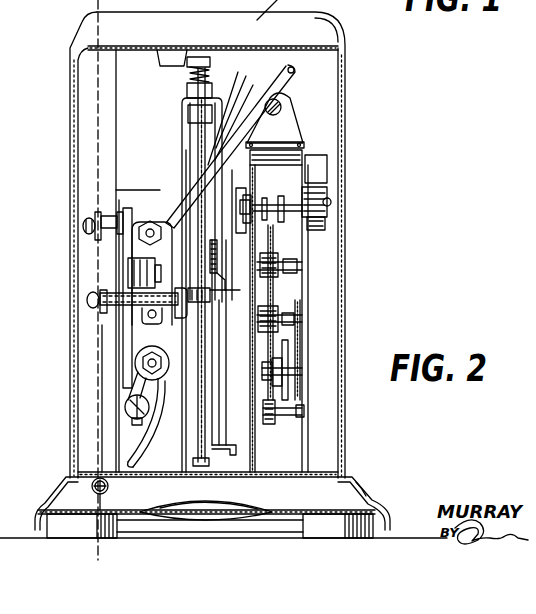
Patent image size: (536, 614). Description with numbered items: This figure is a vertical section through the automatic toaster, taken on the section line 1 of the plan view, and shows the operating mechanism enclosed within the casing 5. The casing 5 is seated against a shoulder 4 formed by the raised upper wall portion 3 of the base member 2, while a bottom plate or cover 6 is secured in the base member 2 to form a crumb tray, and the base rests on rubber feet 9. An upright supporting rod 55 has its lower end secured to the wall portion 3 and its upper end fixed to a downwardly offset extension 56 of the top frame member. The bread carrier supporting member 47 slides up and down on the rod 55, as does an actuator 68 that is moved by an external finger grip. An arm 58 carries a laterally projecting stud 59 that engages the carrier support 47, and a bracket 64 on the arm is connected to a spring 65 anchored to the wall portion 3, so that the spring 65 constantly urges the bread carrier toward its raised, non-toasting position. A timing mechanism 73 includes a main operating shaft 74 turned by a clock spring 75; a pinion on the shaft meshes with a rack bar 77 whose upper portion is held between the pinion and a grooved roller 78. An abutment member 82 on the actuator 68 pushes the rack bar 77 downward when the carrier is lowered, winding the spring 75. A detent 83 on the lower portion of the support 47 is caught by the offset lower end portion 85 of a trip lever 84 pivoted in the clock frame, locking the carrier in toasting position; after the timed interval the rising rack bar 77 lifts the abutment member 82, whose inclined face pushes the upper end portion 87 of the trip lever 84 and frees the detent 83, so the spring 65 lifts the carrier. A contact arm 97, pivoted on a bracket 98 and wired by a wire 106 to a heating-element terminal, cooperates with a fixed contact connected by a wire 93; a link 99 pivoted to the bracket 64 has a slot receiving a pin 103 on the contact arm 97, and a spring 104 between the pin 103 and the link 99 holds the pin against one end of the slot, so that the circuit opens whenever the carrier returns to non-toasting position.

The section line 1 is at (145, 562).
The base member 2 is at (62, 490).
The upper wall portion 3 is at (312, 472).
The shoulder 4 is at (346, 478).
The casing 5 is at (346, 324).
The bottom plate or cover 6 is at (290, 514).
The feet 9 is at (68, 528).
The supporting member 47 is at (181, 147).
The upright supporting rod 55 is at (203, 420).
The extension 56 is at (176, 66).
The arm 58 is at (100, 300).
The stud 59 is at (154, 324).
The bracket 64 is at (121, 371).
The spring 65 is at (110, 487).
The actuator 68 is at (241, 115).
The timing mechanism 73 is at (308, 343).
The main operating shaft 74 is at (295, 203).
The clock spring 75 is at (312, 232).
The rack bar 77 is at (236, 72).
The grooved roller 78 is at (238, 194).
The abutment member 82 is at (214, 272).
The detent 83 is at (232, 322).
The trip lever 84 is at (262, 421).
The lower end portion 85 is at (222, 458).
The upper end portion 87 is at (214, 302).
The wire 93 is at (150, 418).
The contact arm 97 is at (136, 422).
The bracket 98 is at (137, 224).
The link 99 is at (110, 212).
The stud or pin 103 is at (128, 268).
The spring 104 is at (82, 226).
The wire 106 is at (285, 82).